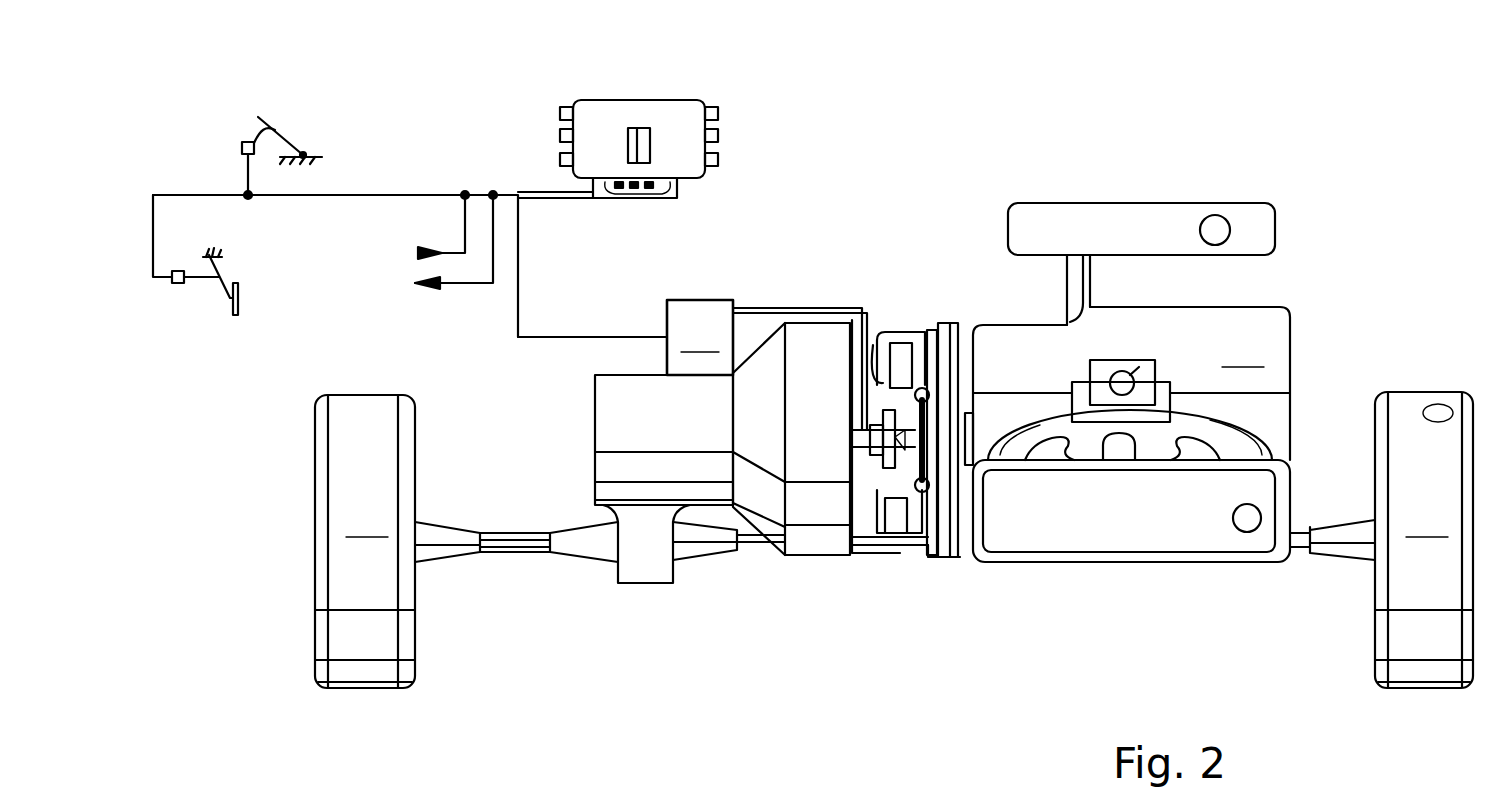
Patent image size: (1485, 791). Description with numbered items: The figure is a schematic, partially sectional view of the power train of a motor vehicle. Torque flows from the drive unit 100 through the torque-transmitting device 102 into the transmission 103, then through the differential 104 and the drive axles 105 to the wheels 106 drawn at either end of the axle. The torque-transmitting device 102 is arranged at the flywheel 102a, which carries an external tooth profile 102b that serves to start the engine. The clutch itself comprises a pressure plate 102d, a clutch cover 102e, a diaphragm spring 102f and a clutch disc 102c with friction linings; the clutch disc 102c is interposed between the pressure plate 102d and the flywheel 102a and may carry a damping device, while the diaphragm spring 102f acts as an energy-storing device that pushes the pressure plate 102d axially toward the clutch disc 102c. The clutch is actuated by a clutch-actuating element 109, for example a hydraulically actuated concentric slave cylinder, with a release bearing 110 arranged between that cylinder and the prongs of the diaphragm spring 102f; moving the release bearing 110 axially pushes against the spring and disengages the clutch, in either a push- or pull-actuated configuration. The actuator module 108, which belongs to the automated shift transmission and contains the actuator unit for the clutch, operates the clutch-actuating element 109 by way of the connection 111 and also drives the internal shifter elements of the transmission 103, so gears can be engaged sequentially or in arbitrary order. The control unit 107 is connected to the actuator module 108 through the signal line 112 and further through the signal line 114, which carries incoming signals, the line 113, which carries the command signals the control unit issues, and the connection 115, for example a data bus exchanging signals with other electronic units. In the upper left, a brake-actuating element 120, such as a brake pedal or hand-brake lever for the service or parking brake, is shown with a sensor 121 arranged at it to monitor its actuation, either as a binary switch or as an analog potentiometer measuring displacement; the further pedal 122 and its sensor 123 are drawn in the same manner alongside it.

The drive unit 100 is at (1127, 382).
The torque-transmitting device 102 is at (923, 433).
The flywheel 102a is at (940, 557).
The external tooth profile 102b is at (958, 328).
The clutch disc 102c is at (928, 347).
The pressure plate 102d is at (902, 347).
The clutch cover 102e is at (898, 550).
The diaphragm spring 102f is at (883, 378).
The transmission 103 is at (813, 507).
The differential 104 is at (640, 555).
The drive axles 105 is at (518, 545).
The wheels 106 is at (894, 540).
The control unit 107 is at (605, 117).
The actuator module 108 is at (700, 337).
The clutch-actuating element 109 is at (852, 440).
The release bearing 110 is at (868, 547).
The connection 111 is at (788, 306).
The signal line 112 is at (590, 337).
The signal line 113 is at (460, 286).
The signal line 114 is at (453, 253).
The connection 115 is at (445, 195).
The brake-actuating element 120 is at (238, 300).
The sensor 121 is at (178, 284).
The brake pedal 122 is at (258, 118).
The brake pedal sensor 123 is at (242, 148).